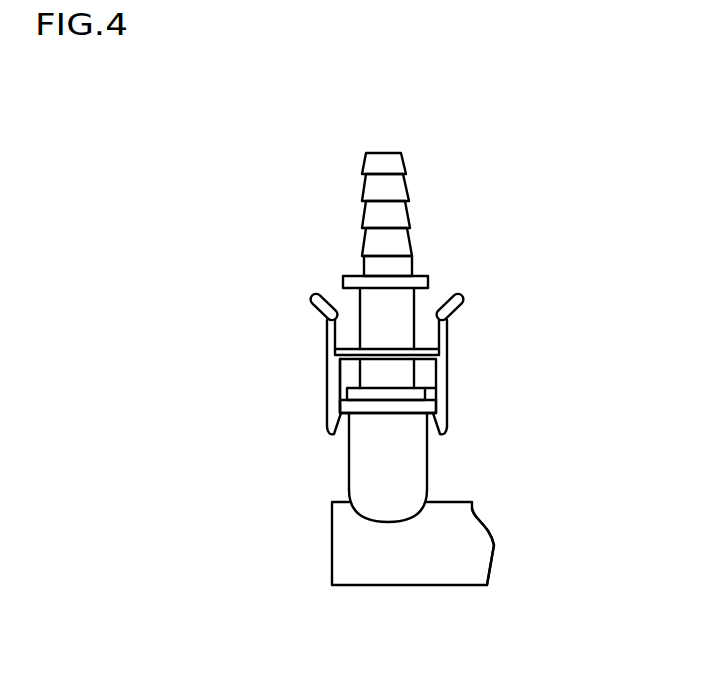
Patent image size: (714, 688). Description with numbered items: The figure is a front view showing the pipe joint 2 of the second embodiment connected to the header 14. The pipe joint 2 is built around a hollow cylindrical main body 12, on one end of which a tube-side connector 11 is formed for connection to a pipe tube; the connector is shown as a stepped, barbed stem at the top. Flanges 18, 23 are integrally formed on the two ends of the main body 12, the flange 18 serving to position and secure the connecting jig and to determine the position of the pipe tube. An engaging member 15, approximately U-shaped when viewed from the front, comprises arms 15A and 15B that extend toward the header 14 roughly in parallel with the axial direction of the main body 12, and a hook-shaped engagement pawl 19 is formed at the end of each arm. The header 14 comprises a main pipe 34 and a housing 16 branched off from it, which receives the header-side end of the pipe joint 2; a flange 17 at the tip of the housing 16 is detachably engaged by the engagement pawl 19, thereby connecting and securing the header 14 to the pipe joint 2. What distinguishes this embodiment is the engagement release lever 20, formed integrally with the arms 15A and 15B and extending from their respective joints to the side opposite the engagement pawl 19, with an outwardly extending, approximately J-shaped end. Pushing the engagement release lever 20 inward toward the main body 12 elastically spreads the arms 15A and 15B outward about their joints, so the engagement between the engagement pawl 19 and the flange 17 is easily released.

The pipe joint 2 is at (554, 231).
The tube-side connector 11 is at (368, 207).
The main body 12 is at (417, 303).
The header 14 is at (332, 537).
The engaging member 15 is at (450, 365).
The arm 15A is at (448, 397).
The arm 15B is at (330, 393).
The housing 16 is at (413, 462).
The flange 17 is at (448, 403).
The flange 18 is at (430, 287).
The engagement pawl 19 is at (333, 425).
The engagement release lever 20 is at (313, 302).
The flange 23 is at (445, 390).
The main pipe 34 is at (473, 561).